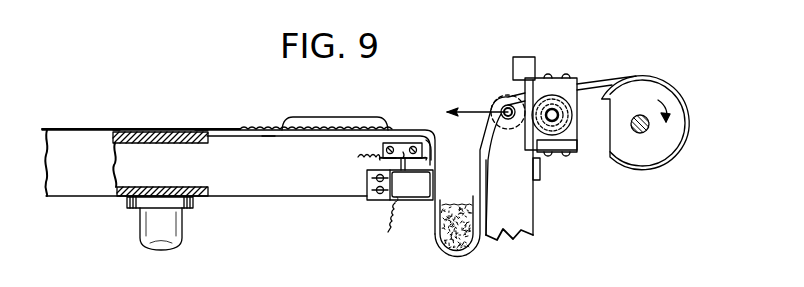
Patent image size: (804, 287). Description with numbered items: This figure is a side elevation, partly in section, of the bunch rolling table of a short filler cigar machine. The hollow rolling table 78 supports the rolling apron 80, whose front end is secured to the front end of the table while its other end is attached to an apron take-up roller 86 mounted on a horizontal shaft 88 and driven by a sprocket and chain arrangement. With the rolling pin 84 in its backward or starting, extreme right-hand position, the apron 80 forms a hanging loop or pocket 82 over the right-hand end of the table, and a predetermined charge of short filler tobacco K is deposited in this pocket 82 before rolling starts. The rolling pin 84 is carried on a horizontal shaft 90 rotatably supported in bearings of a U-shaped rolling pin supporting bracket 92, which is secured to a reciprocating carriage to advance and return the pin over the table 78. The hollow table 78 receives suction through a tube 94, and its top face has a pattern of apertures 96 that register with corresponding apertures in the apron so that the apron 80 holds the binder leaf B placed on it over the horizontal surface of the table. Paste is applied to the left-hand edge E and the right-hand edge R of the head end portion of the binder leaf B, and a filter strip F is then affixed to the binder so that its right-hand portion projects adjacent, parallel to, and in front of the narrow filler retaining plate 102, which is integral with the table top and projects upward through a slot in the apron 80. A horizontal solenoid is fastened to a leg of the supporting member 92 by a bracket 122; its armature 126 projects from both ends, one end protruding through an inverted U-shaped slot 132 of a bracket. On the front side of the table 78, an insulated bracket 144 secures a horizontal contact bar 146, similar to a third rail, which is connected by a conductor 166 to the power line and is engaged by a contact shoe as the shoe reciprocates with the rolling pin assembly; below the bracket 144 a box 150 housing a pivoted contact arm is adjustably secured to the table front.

The hollow rolling table 78 is at (252, 192).
The rolling apron 80 is at (75, 129).
The hanging loop or pocket 82 is at (457, 255).
The rolling pin 84 is at (500, 104).
The apron take-up roller 86 is at (662, 150).
The horizontal shaft 88 is at (649, 128).
The horizontal shaft 90 is at (512, 95).
The U-shaped rolling pin supporting bracket 92 is at (525, 213).
The tube 94 is at (183, 238).
The apertures 96 is at (197, 143).
The filler retaining plate 102 is at (353, 116).
The bracket 122 is at (537, 61).
The armature 126 is at (576, 151).
The inverted U-shaped slot 132 is at (536, 150).
The insulated bracket 144 is at (382, 150).
The horizontal contact bar 146 is at (432, 152).
The box 150 is at (428, 200).
The conductor 166 is at (357, 158).
The left-hand edge E is at (115, 130).
The binder leaf B is at (197, 130).
The filter strip F is at (295, 125).
The right-hand edge R is at (268, 134).
The short filler tobacco charge K is at (463, 203).